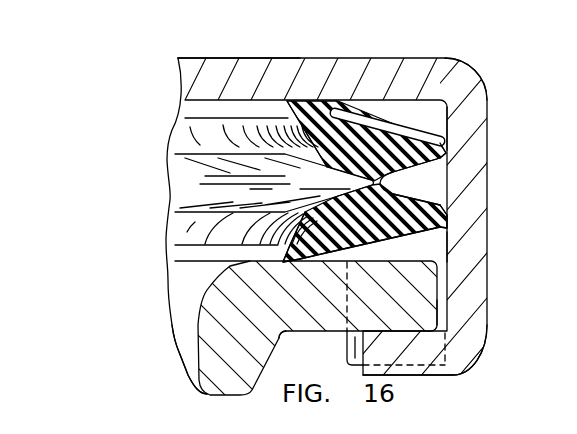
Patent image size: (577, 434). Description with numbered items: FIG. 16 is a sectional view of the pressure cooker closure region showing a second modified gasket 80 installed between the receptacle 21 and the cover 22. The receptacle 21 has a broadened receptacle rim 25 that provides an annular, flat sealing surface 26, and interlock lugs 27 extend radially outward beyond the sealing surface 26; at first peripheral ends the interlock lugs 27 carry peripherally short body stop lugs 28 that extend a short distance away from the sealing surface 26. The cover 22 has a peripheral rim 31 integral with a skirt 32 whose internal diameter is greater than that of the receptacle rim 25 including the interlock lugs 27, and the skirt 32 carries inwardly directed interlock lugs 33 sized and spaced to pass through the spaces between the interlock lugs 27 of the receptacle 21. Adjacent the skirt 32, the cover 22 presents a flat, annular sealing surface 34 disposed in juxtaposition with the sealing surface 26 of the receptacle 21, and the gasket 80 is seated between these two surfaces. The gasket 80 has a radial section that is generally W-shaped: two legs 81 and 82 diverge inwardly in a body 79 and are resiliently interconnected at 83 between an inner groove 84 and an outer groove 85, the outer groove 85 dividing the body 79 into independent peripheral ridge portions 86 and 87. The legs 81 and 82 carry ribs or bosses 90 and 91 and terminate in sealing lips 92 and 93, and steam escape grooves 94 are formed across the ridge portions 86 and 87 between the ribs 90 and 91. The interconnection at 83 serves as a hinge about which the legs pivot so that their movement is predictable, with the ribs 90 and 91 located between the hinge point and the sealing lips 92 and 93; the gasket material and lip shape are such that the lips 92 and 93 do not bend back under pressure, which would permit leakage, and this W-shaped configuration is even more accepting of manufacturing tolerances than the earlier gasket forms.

The receptacle 21 is at (185, 391).
The cover 22 is at (178, 57).
The receptacle rim 25 is at (205, 303).
The sealing surface 26 is at (440, 262).
The interlock lugs 27 is at (437, 300).
The body stop lugs 28 is at (349, 346).
The peripheral rim 31 is at (470, 73).
The skirt 32 is at (447, 243).
The interlock lugs 33 is at (418, 376).
The sealing surface 34 is at (385, 113).
The body 79 is at (427, 125).
The gasket 80 is at (152, 196).
The leg 81 is at (317, 118).
The leg 82 is at (318, 262).
The resilient interconnection 83 is at (381, 183).
The inner groove 84 is at (274, 183).
The outer groove 85 is at (430, 202).
The peripheral ridge portion 86 is at (447, 144).
The peripheral ridge portion 87 is at (447, 226).
The rib 90 is at (365, 113).
The rib 91 is at (368, 262).
The sealing lip 92 is at (286, 100).
The sealing lip 93 is at (283, 265).
The steam escape grooves 94 is at (447, 255).